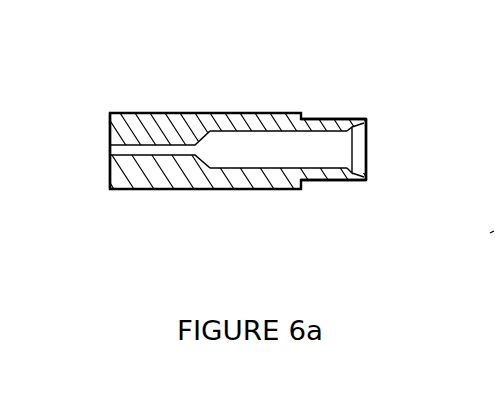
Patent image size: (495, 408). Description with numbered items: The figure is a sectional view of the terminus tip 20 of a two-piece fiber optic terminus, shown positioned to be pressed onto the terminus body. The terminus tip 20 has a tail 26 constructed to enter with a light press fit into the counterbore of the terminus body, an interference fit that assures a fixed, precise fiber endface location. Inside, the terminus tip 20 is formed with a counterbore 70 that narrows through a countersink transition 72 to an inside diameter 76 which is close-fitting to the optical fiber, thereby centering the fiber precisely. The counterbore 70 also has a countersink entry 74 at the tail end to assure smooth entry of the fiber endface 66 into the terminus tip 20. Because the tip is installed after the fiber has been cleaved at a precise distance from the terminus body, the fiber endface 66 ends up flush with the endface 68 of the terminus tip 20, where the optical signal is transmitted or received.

The terminus tip 20 is at (195, 189).
The endface 68 is at (110, 130).
The inside diameter 76 is at (150, 146).
The countersink transition 72 is at (215, 158).
The counterbore 70 is at (329, 158).
The tail 26 is at (358, 119).
The countersink entry 74 is at (363, 130).
The endface 66 is at (494, 231).